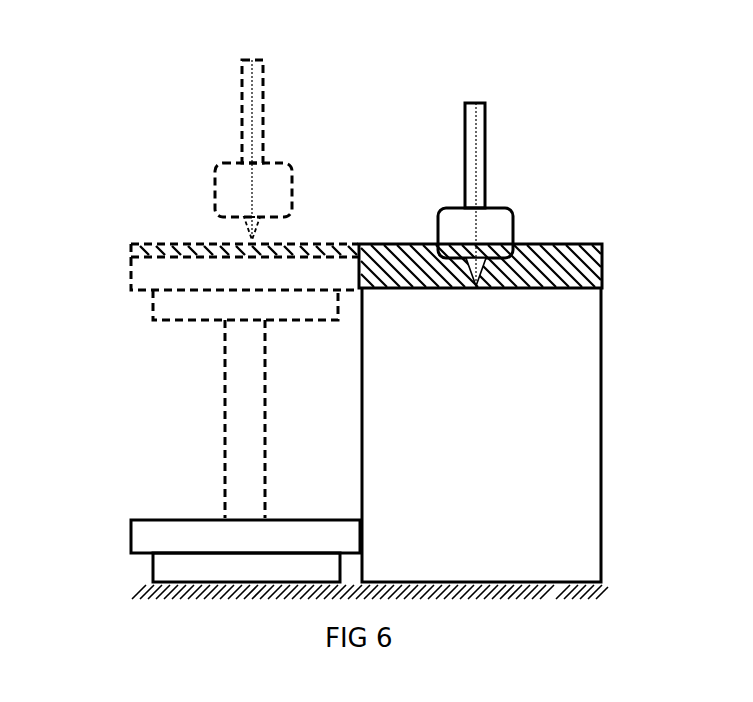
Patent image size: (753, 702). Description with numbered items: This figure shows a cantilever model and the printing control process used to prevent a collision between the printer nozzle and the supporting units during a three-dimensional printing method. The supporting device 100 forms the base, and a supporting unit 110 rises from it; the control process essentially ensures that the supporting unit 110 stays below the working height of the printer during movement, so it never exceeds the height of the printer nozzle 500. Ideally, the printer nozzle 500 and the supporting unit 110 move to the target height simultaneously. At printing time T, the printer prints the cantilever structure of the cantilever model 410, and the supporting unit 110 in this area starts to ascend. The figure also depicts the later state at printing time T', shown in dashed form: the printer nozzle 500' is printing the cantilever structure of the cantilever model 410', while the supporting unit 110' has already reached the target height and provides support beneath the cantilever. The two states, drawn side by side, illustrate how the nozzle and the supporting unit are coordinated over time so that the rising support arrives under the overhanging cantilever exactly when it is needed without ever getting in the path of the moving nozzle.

The supporting device 100 is at (127, 590).
The supporting unit 110 is at (204, 484).
The supporting unit at time T' 110' is at (203, 388).
The cantilever model during printing 410 is at (517, 413).
The cantilever model being printed at time T' 410' is at (203, 225).
The printer nozzle 500 is at (557, 194).
The printer nozzle at time T' 500' is at (168, 150).
The printing time T is at (470, 97).
The printing time T' is at (238, 49).